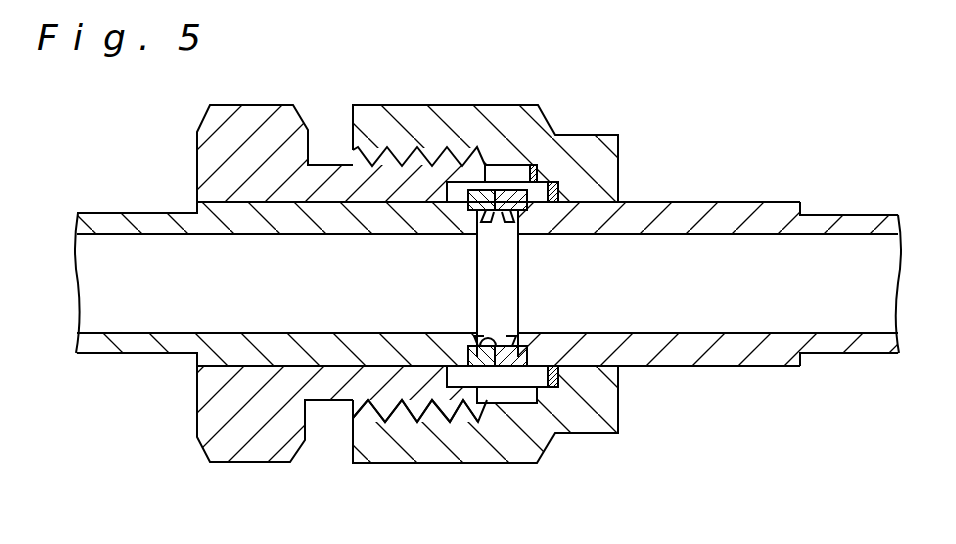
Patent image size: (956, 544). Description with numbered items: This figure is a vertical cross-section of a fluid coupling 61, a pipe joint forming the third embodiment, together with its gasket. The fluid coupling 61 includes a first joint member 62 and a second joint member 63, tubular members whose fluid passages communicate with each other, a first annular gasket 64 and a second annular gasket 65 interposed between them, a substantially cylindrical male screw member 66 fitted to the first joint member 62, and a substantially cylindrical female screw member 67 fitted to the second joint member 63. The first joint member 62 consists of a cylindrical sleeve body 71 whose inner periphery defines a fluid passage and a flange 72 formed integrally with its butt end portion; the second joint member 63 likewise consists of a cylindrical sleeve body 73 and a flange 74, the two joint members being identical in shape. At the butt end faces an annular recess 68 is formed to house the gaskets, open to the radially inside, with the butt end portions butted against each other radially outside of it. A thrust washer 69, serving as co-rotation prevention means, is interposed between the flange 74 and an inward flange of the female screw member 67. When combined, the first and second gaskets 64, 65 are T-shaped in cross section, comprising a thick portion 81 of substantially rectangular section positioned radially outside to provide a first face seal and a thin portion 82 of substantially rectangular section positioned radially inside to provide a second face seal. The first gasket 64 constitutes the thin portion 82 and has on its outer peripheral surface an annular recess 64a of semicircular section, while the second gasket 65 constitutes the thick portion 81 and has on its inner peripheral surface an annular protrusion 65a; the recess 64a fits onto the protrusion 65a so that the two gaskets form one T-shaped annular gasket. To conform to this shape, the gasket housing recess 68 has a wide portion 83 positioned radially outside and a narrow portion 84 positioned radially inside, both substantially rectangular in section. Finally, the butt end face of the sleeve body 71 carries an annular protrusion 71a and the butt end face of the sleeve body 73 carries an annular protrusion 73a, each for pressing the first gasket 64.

The fluid coupling 61 is at (792, 156).
The first joint member 62 is at (130, 213).
The second joint member 63 is at (833, 215).
The first annular gasket 64 is at (520, 216).
The annular recess 64a is at (475, 218).
The second annular gasket 65 is at (527, 190).
The annular protrusion 65a is at (515, 215).
The male screw member 66 is at (259, 105).
The female screw member 67 is at (502, 105).
The annular recess 68 is at (463, 187).
The thrust washer 69 is at (560, 192).
The sleeve body 71 is at (225, 350).
The annular protrusion 71a is at (483, 350).
The flange 72 is at (450, 410).
The sleeve body 73 is at (737, 352).
The annular protrusion 73a is at (515, 345).
The flange 74 is at (505, 385).
The thick portion 81 is at (485, 368).
The thin portion 82 is at (497, 345).
The wide portion 83 is at (505, 403).
The narrow portion 84 is at (535, 337).